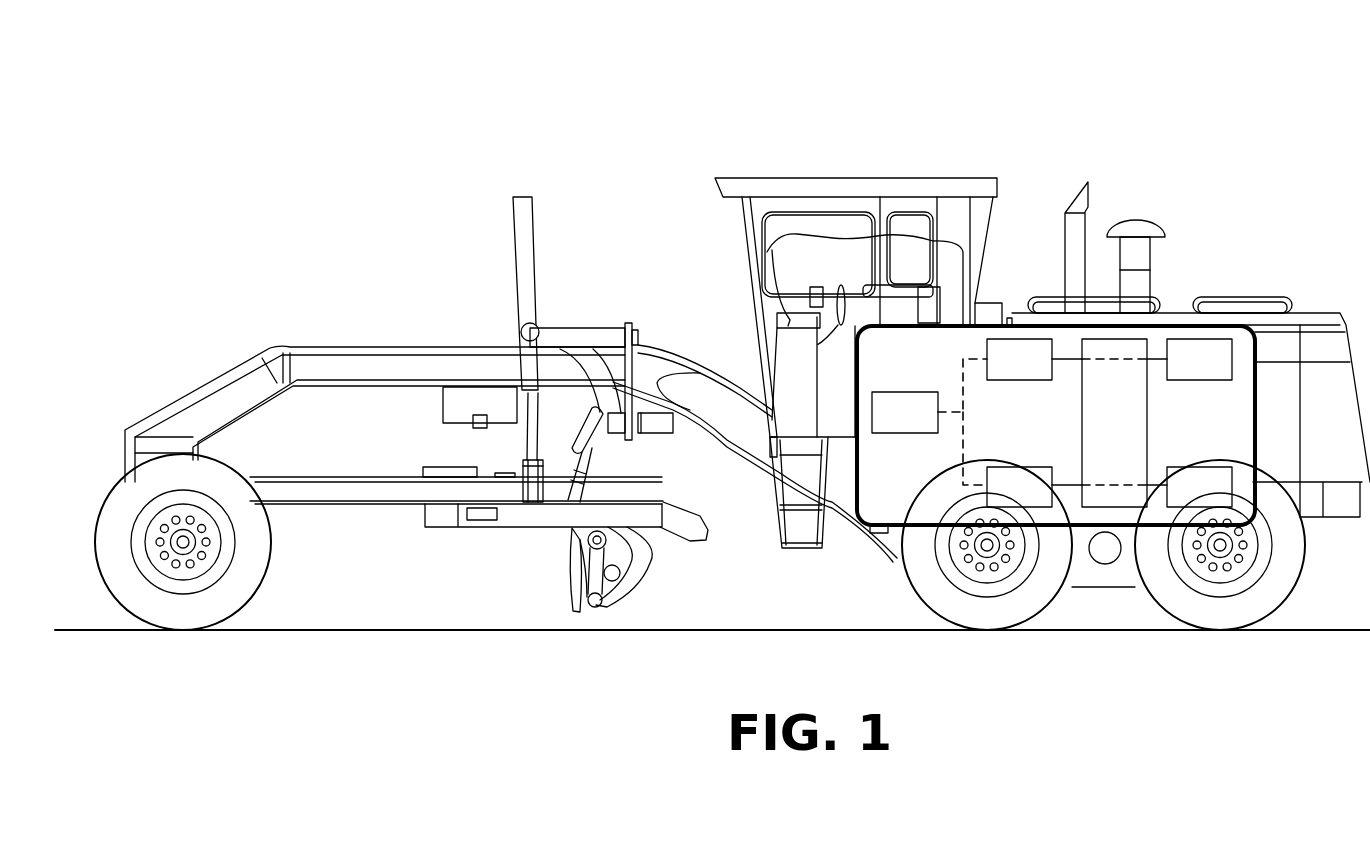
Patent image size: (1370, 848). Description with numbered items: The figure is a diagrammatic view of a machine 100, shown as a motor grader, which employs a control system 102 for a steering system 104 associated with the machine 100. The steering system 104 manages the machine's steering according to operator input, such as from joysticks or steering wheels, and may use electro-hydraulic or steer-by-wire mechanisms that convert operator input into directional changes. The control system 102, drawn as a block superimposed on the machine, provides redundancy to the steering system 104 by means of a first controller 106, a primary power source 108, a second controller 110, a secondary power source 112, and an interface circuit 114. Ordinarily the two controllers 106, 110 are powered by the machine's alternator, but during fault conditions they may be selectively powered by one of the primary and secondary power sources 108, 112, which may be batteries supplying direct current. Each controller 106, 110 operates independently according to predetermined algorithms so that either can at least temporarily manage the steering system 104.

The machine 100 is at (322, 195).
The control system 102 is at (1182, 323).
The steering system 104 is at (905, 412).
The first controller 106 is at (1019, 359).
The primary power source 108 is at (1199, 359).
The second controller 110 is at (1019, 487).
The secondary power source 112 is at (1199, 487).
The interface circuit 114 is at (1114, 423).